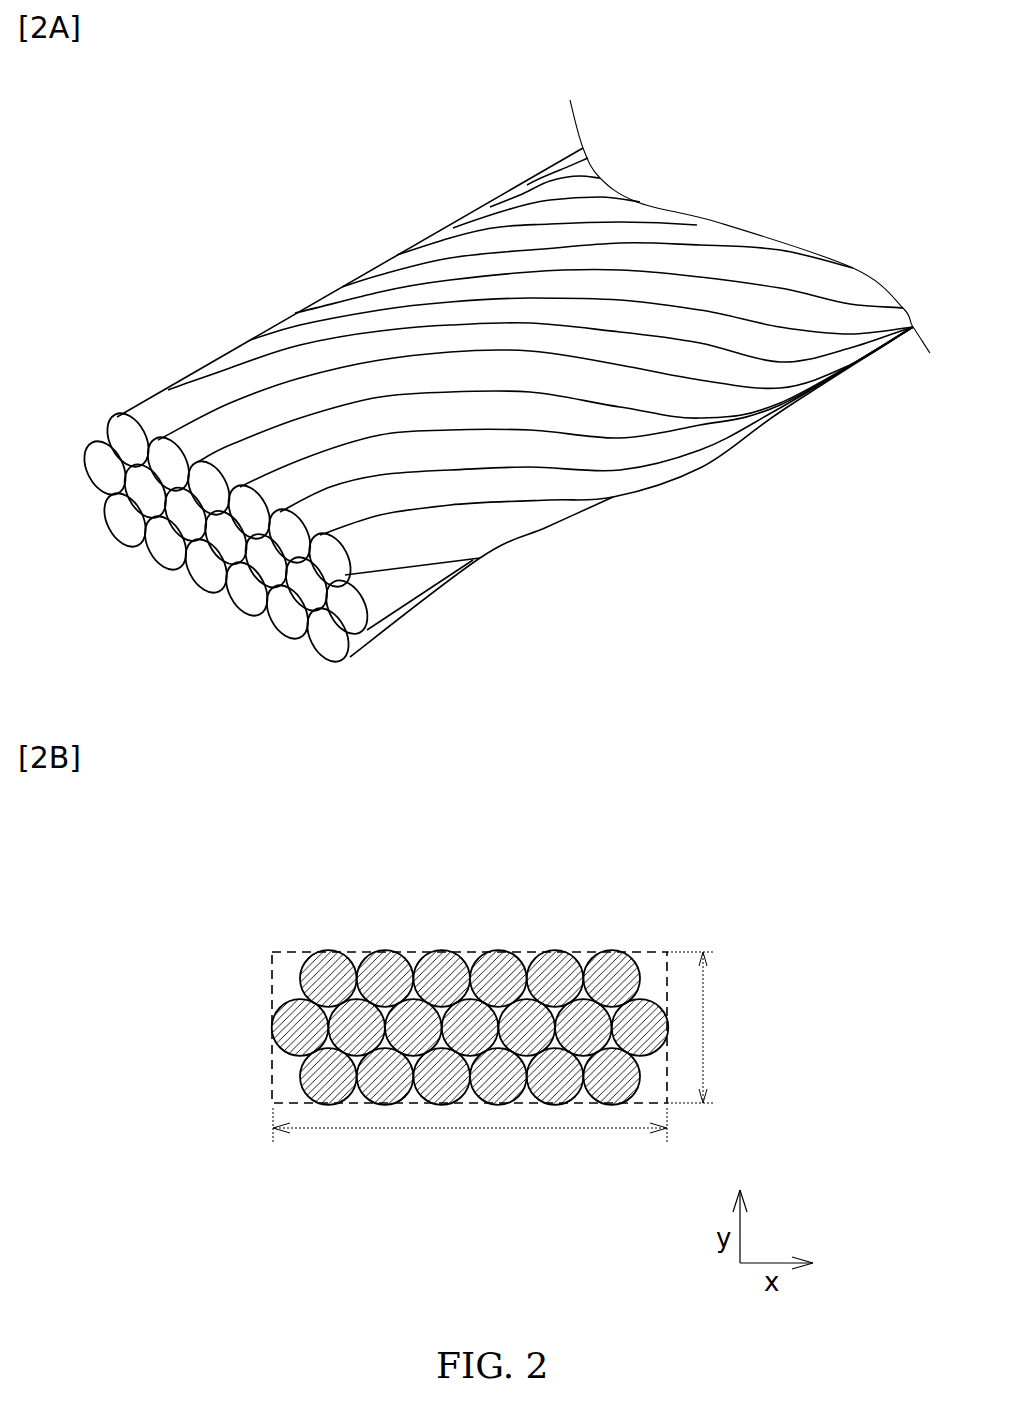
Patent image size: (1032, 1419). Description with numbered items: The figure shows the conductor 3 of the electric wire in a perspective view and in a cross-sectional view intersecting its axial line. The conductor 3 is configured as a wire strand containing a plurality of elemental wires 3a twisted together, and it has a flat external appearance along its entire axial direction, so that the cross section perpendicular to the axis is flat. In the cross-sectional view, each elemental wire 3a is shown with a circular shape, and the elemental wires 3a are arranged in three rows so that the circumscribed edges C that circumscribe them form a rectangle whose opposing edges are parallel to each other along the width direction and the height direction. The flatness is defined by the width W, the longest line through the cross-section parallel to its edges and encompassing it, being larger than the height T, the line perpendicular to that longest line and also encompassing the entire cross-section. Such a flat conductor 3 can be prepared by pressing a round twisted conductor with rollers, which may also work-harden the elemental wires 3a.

The conductor 3 is at (489, 595).
The elemental wire 3a is at (123, 440).
The circumscribed edge C is at (590, 952).
The height T is at (697, 1027).
The width W is at (470, 1135).